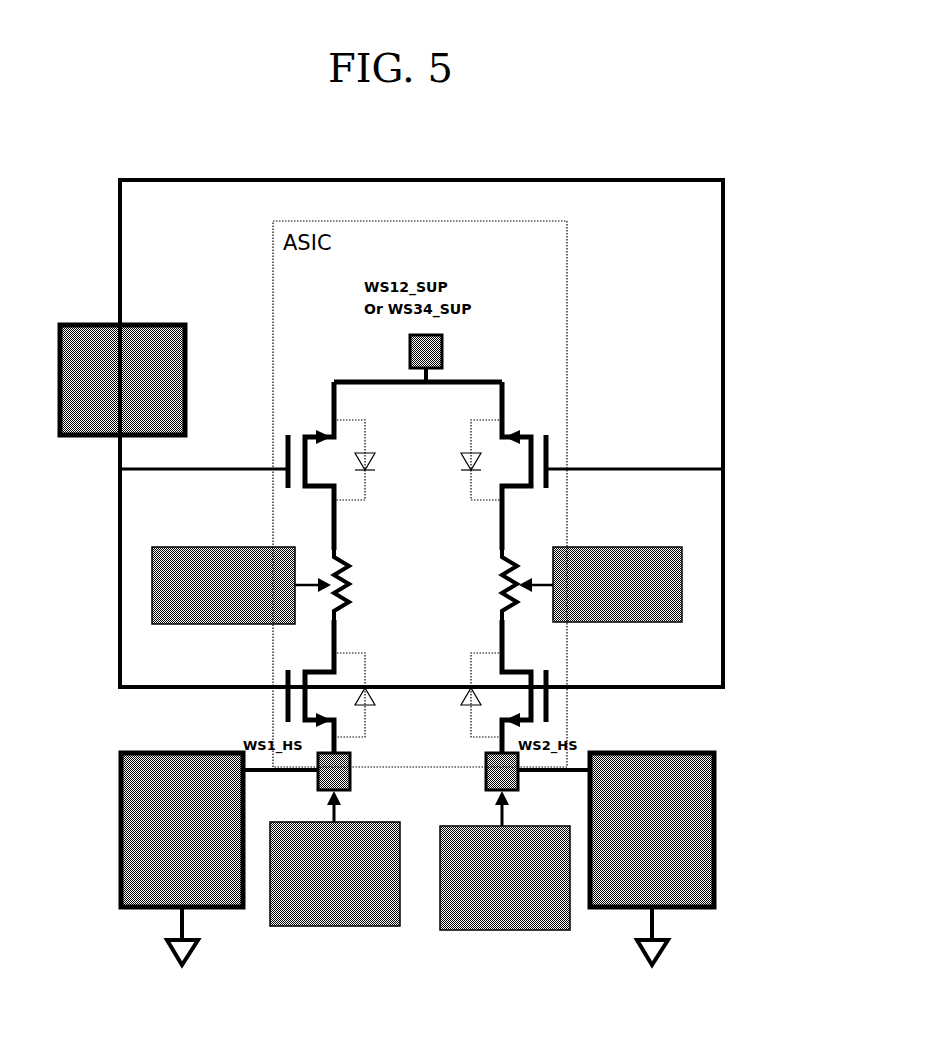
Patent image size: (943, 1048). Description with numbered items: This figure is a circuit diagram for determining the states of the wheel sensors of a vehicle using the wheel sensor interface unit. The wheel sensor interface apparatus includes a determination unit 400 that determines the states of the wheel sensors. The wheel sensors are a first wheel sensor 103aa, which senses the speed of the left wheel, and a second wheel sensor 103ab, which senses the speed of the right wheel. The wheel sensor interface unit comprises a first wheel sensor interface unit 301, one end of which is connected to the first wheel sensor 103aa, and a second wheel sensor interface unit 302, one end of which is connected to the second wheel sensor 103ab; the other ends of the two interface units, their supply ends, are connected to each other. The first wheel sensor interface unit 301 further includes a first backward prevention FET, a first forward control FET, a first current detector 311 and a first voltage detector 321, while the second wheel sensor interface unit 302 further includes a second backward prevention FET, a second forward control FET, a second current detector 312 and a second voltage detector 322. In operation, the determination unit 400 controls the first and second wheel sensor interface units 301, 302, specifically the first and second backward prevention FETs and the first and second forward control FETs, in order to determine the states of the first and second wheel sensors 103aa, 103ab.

The determination unit 400 is at (150, 323).
The first wheel sensor interface unit 301 is at (336, 379).
The second wheel sensor interface unit 302 is at (500, 379).
The first current detector 311 is at (206, 546).
The second current detector 312 is at (620, 546).
The first voltage detector 321 is at (337, 928).
The second voltage detector 322 is at (511, 932).
The first wheel sensor 103aa is at (152, 910).
The second wheel sensor 103ab is at (620, 910).